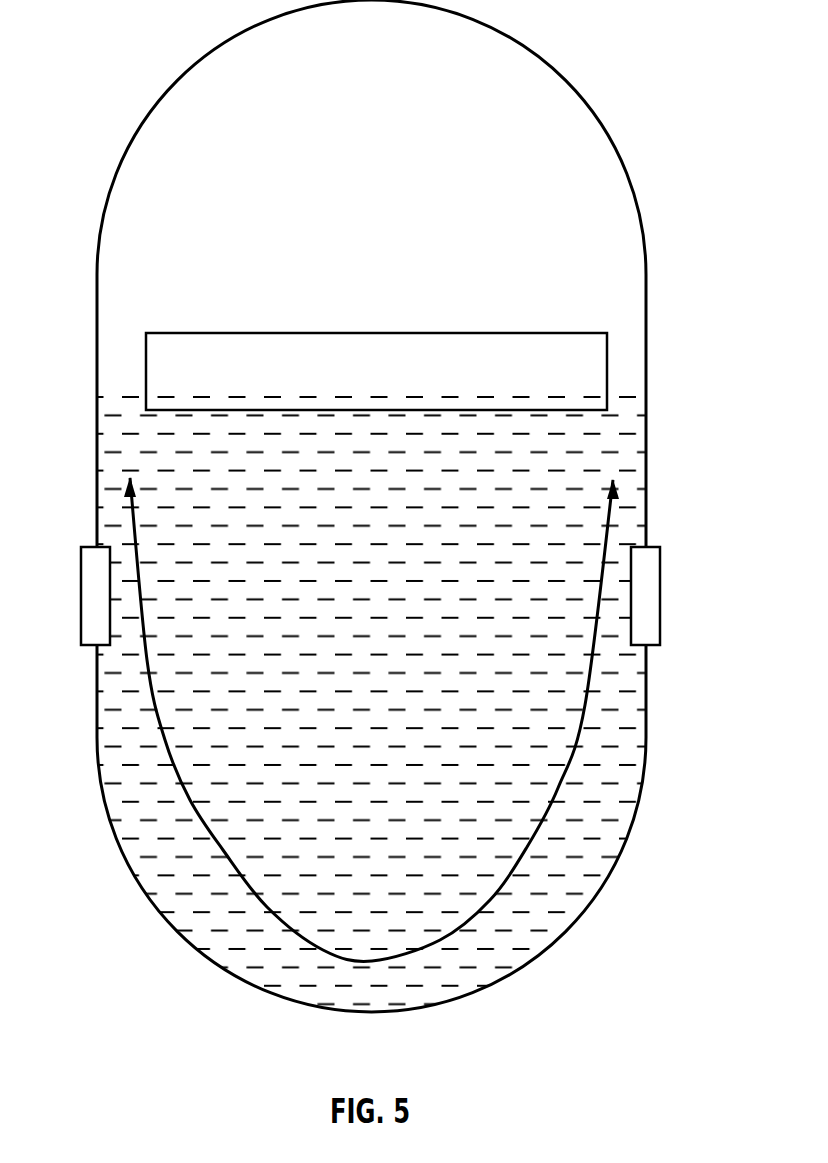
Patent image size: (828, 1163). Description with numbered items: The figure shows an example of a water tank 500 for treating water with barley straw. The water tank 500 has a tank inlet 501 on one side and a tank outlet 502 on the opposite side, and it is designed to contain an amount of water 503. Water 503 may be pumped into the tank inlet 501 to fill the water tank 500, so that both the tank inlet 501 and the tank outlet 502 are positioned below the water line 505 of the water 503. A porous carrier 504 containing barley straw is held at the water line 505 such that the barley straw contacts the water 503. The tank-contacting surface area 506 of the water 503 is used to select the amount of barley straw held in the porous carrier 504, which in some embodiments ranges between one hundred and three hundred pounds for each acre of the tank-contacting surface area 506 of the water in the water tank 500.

The water tank 500 is at (202, 57).
The tank inlet 501 is at (92, 546).
The tank outlet 502 is at (648, 547).
The water 503 is at (420, 622).
The porous carrier 504 is at (215, 333).
The water line 505 is at (133, 398).
The tank-contacting surface area 506 is at (558, 788).